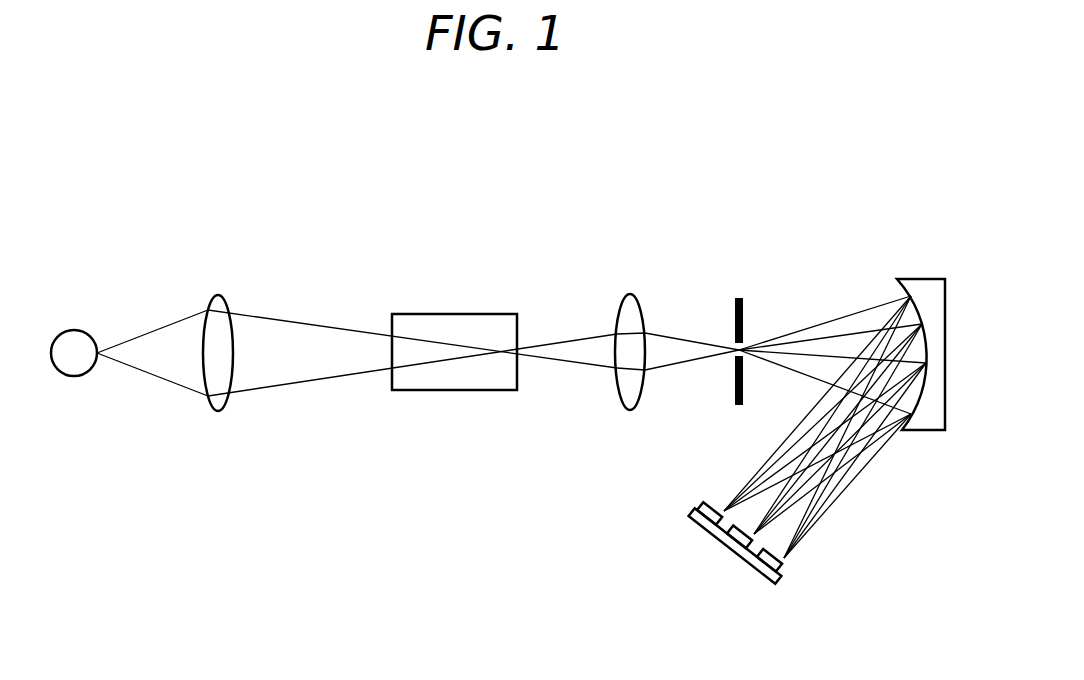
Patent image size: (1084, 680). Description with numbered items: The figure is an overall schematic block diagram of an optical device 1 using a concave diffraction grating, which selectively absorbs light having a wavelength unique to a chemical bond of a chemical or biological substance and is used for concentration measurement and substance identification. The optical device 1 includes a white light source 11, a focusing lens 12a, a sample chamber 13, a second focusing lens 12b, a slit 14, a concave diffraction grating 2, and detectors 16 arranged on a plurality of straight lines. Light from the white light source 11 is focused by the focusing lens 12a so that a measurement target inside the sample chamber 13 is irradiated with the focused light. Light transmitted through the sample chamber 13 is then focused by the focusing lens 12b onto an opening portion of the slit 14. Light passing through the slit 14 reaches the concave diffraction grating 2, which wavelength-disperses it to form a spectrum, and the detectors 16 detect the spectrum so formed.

The optical device 1 is at (498, 155).
The white light source 11 is at (73, 330).
The focusing lens 12a is at (217, 295).
The focusing lens 12b is at (630, 294).
The sample chamber 13 is at (453, 314).
The slit 14 is at (744, 298).
The concave diffraction grating 2 is at (930, 279).
The detectors 16 is at (699, 524).